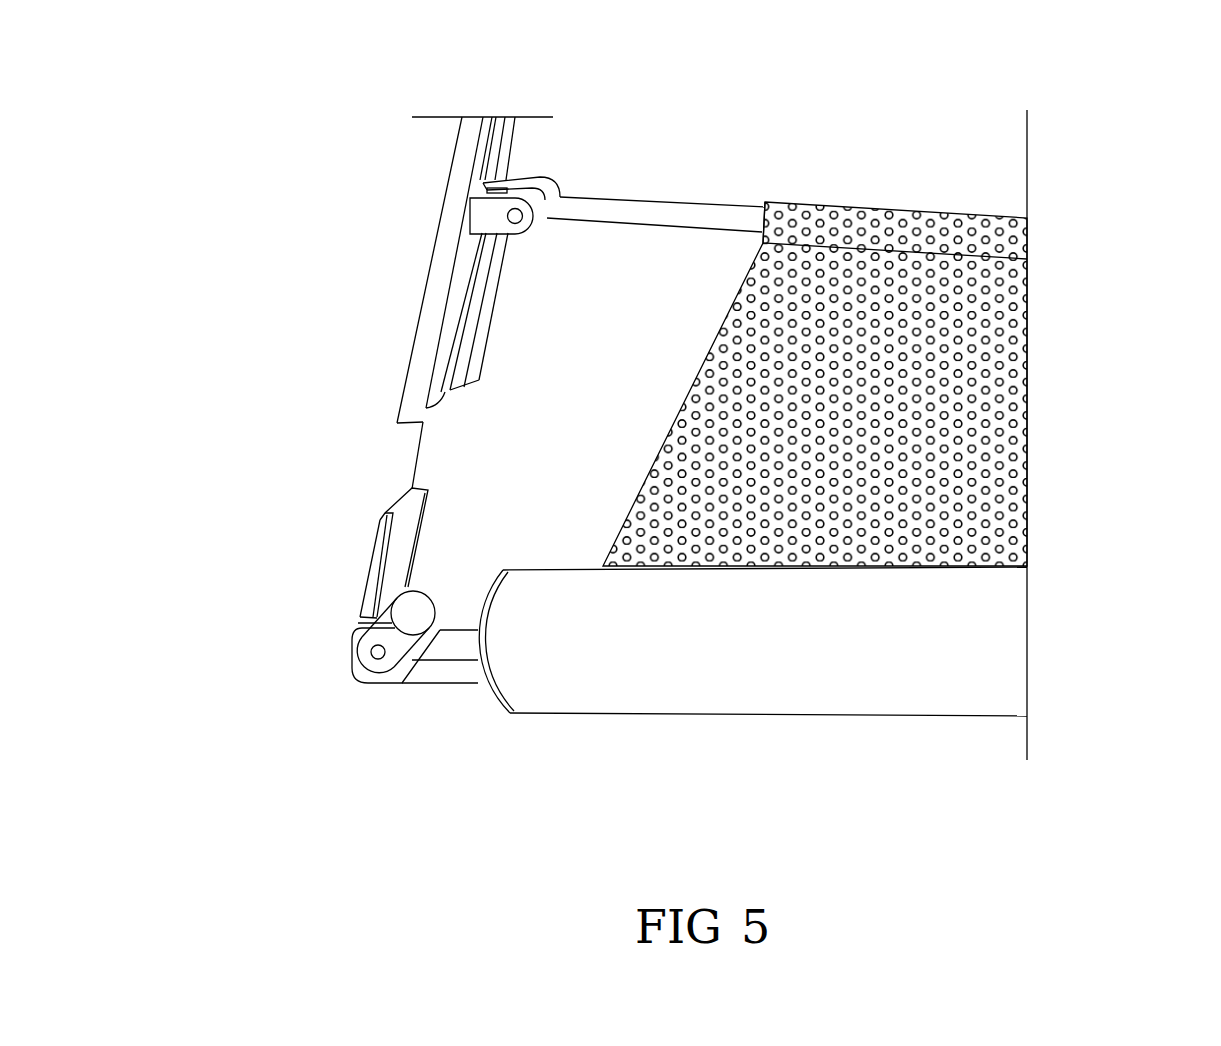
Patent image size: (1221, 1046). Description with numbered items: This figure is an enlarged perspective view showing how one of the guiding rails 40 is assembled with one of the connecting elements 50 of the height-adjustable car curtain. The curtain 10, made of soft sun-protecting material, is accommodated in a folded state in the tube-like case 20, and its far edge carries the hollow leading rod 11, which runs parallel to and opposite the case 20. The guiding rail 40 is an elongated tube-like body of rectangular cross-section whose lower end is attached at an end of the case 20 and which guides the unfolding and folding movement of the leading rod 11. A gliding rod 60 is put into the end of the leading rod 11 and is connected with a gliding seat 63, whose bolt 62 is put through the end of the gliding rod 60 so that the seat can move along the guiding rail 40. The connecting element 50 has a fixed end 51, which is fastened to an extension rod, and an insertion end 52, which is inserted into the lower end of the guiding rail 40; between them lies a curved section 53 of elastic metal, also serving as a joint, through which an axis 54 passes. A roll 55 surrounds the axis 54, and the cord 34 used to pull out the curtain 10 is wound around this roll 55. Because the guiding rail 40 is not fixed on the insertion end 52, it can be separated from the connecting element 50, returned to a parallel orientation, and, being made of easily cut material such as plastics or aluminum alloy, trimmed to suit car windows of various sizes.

The curtain 10 is at (1042, 426).
The leading rod 11 is at (878, 230).
The case 20 is at (882, 730).
The cord 34 is at (404, 468).
The guiding rail 40 is at (400, 333).
The connecting element 50 is at (366, 633).
The fixed end 51 is at (435, 666).
The insertion end 52 is at (385, 535).
The curved section 53 is at (365, 668).
The axis 54 is at (372, 652).
The roll 55 is at (413, 608).
The gliding rod 60 is at (660, 195).
The bolt 62 is at (513, 215).
The gliding seat 63 is at (480, 217).